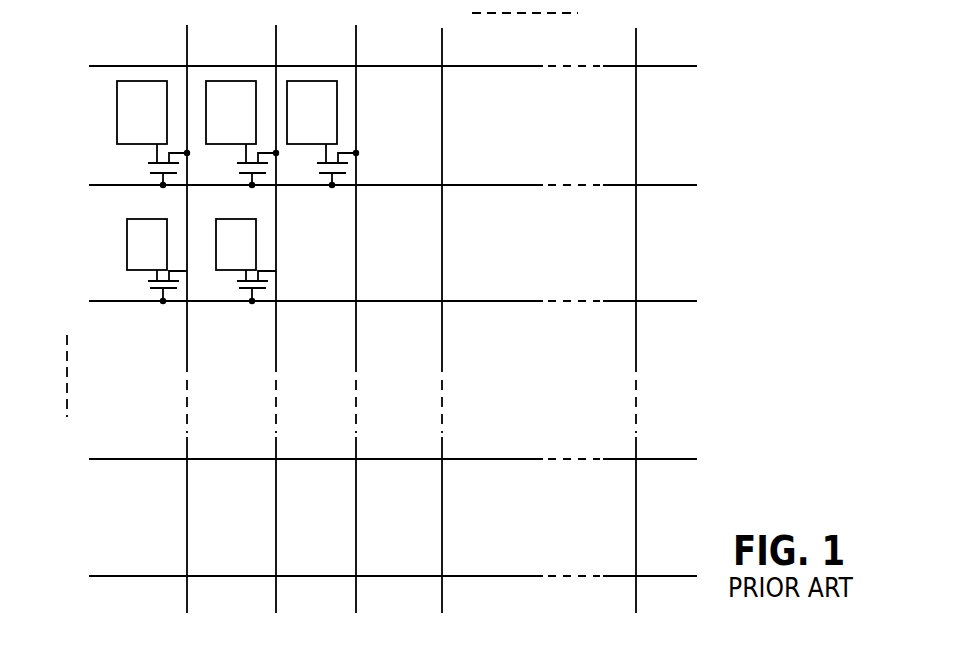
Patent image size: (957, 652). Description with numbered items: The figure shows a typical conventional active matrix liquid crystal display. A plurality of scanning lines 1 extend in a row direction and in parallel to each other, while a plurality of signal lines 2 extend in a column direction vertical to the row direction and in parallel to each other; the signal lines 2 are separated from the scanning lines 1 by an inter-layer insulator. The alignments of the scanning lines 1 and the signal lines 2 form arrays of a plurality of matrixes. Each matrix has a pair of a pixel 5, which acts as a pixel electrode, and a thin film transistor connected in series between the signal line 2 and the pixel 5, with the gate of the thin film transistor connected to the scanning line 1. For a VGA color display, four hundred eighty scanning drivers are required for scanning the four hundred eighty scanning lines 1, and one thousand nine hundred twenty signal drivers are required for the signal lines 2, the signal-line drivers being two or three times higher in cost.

The scanning line 1 is at (493, 187).
The signal line 2 is at (187, 314).
The pixel 5 is at (148, 90).